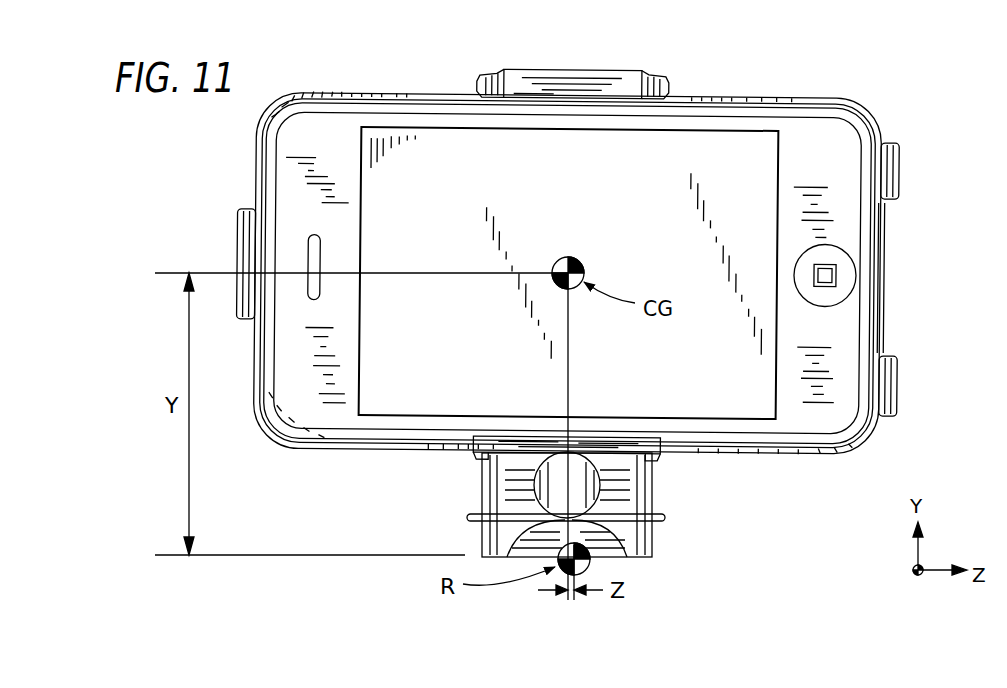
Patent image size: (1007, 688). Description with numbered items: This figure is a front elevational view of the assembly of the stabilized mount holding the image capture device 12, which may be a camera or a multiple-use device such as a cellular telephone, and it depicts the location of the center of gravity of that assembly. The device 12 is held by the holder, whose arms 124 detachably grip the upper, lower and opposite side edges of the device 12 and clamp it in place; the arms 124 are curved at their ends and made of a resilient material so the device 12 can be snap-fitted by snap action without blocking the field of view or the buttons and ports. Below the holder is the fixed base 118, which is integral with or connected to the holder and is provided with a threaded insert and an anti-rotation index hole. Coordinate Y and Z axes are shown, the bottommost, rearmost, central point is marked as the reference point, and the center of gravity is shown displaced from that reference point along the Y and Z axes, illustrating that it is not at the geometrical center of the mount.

The image capture device 12 is at (319, 412).
The fixed base 118 is at (480, 485).
The arms 124 is at (517, 74).